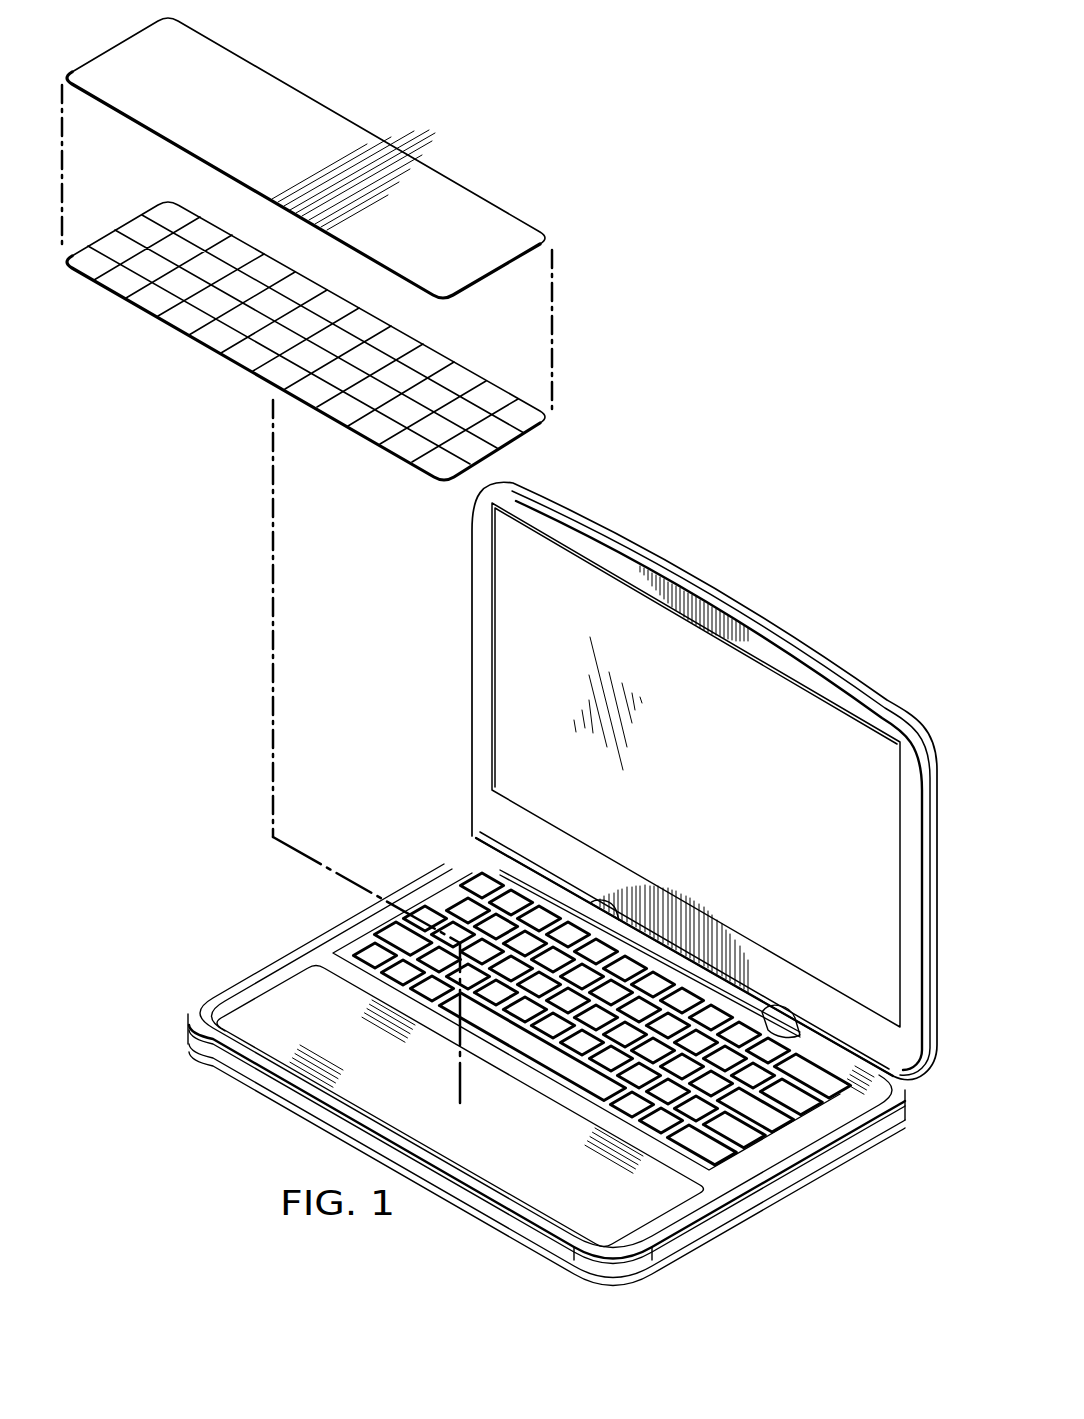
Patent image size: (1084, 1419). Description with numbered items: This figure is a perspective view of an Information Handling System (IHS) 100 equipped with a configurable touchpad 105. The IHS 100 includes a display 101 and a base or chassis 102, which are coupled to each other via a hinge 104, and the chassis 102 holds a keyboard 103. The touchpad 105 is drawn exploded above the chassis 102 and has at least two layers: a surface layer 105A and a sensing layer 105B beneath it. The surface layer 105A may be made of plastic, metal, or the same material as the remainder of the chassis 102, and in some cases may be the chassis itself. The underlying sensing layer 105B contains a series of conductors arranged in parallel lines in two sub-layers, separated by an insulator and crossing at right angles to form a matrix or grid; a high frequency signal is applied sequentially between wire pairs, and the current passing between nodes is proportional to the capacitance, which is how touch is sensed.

The Information Handling System (IHS) 100 is at (753, 228).
The display 101 is at (782, 818).
The base or chassis 102 is at (835, 1168).
The keyboard 103 is at (437, 887).
The hinge 104 is at (760, 1013).
The configurable touchpad 105 is at (565, 237).
The surface layer 105A is at (483, 281).
The sensing layer 105B is at (215, 352).